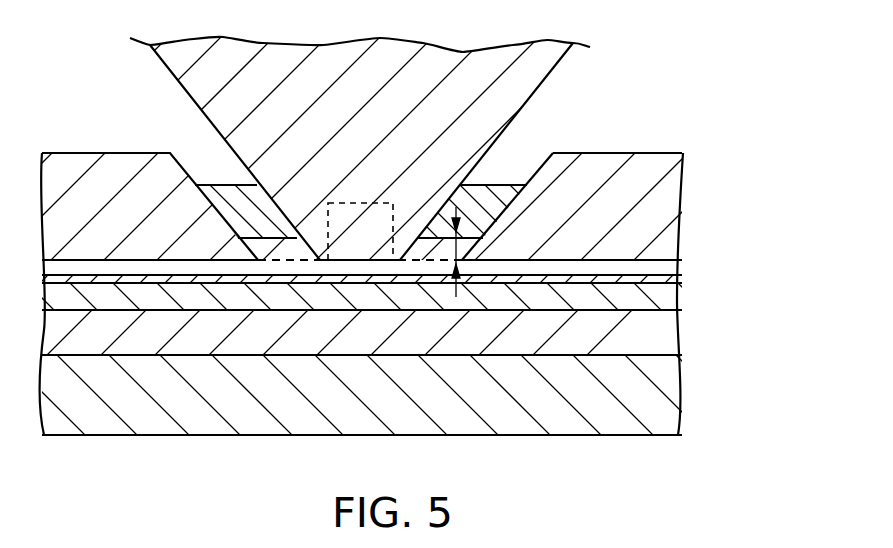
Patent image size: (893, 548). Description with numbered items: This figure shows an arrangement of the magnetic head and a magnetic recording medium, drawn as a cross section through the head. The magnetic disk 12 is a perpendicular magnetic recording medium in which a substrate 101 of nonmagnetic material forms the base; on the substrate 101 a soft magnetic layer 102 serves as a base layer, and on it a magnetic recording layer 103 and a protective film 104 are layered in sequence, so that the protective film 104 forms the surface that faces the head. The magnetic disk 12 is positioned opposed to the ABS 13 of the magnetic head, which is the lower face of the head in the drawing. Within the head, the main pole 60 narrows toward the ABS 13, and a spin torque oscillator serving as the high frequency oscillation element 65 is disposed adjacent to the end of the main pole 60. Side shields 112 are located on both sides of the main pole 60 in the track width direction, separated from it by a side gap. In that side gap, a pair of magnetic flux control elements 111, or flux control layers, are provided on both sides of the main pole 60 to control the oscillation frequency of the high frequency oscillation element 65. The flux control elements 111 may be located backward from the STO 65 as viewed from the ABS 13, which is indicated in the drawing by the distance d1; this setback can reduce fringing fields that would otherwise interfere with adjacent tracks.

The main pole 60 is at (523, 91).
The high frequency oscillation element 65 is at (360, 203).
The magnetic flux control element 111 is at (237, 195).
The side shield 112 is at (670, 205).
The ABS 13 is at (663, 266).
The protective film 104 is at (665, 280).
The magnetic recording layer 103 is at (667, 301).
The soft magnetic layer 102 is at (668, 335).
The substrate 101 is at (741, 262).
The magnetic disk 12 is at (446, 274).
The depth d1 is at (457, 247).